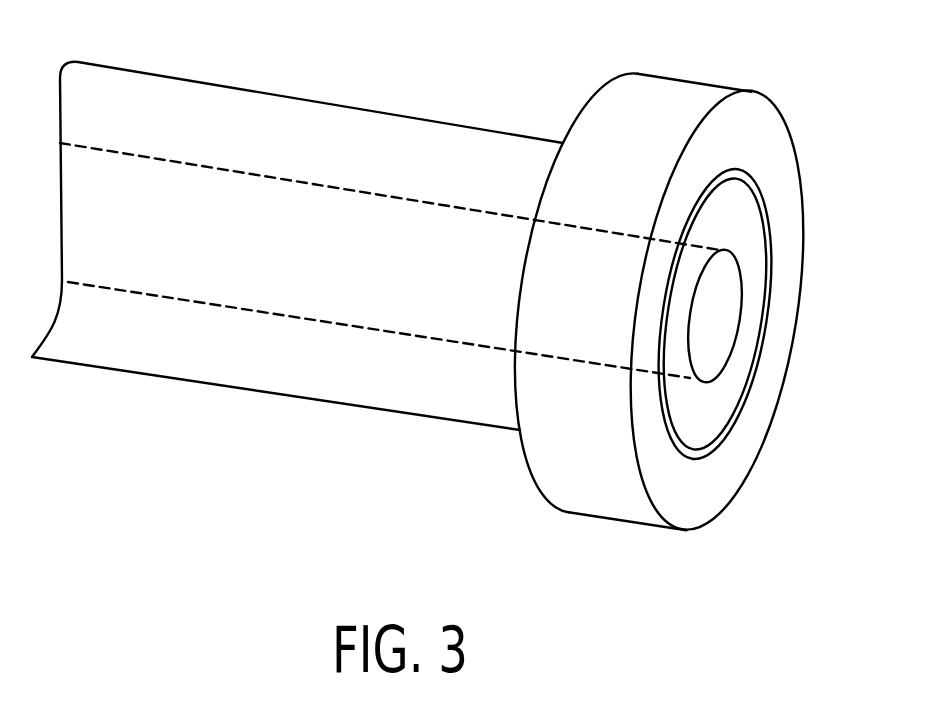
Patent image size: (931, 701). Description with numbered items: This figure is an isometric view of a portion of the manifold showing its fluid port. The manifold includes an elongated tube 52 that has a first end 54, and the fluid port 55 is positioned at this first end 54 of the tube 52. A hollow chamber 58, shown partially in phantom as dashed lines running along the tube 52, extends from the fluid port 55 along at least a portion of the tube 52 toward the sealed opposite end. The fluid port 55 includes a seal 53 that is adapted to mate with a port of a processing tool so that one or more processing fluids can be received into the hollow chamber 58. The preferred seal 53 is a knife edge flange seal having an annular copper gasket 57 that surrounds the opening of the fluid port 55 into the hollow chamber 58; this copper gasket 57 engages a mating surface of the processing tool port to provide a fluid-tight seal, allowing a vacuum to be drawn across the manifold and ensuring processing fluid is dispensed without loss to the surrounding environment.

The elongated tube 52 is at (235, 360).
The seal 53 is at (670, 97).
The first end 54 is at (550, 450).
The fluid port 55 is at (727, 315).
The annular copper gasket 57 is at (763, 213).
The hollow chamber 58 is at (120, 183).